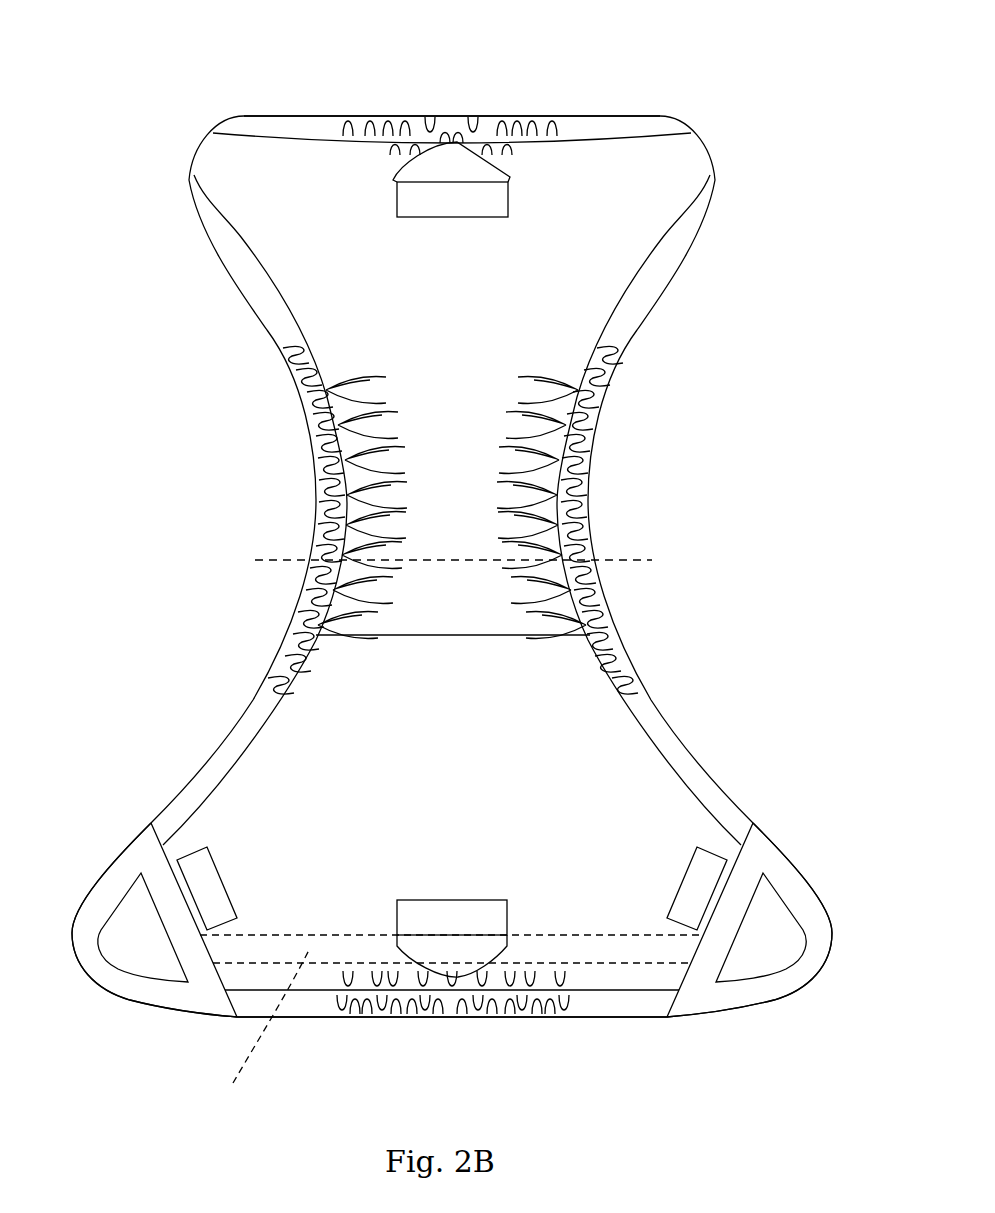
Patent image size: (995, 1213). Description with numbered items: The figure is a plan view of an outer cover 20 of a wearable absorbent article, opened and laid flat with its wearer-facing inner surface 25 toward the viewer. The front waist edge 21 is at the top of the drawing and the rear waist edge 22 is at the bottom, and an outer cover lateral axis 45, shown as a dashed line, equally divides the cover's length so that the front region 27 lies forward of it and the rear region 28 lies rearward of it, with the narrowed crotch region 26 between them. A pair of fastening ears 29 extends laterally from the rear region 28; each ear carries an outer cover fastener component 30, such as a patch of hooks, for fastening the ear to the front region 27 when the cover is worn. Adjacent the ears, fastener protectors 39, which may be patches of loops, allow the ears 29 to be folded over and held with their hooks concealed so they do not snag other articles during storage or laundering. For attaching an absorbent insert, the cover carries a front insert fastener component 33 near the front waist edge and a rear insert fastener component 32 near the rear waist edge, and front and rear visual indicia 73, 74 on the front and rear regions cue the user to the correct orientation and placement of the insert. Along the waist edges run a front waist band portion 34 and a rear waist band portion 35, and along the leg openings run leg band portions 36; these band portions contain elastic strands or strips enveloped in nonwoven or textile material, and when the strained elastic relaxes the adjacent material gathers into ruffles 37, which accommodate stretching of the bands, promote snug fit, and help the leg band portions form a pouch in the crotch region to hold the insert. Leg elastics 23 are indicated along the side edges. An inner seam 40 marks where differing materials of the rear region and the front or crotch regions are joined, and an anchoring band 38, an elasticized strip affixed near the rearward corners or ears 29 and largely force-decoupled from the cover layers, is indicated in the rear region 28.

The outer cover 20 is at (675, 498).
The front waist edge 21 is at (520, 114).
The rear waist edge 22 is at (540, 1019).
The leg elastics 23 is at (284, 358).
The inner surface 25 is at (456, 357).
The crotch region 26 is at (485, 480).
The front region 27 is at (250, 181).
The rear region 28 is at (255, 850).
The fastening ears 29 is at (140, 995).
The outer cover fastener components 30 is at (138, 918).
The rear insert fastener component 32 is at (490, 917).
The front insert fastener component 33 is at (482, 205).
The front waist band portion 34 is at (625, 128).
The rear waist band portion 35 is at (315, 997).
The leg band portions 36 is at (243, 275).
The ruffles 37 is at (385, 118).
The anchoring band 38 is at (262, 1029).
The fastener protectors 39 is at (203, 868).
The inner seam 40 is at (494, 634).
The outer cover lateral axis 45 is at (434, 561).
The front visual indicia 73 is at (442, 167).
The rear visual indicia 74 is at (420, 950).